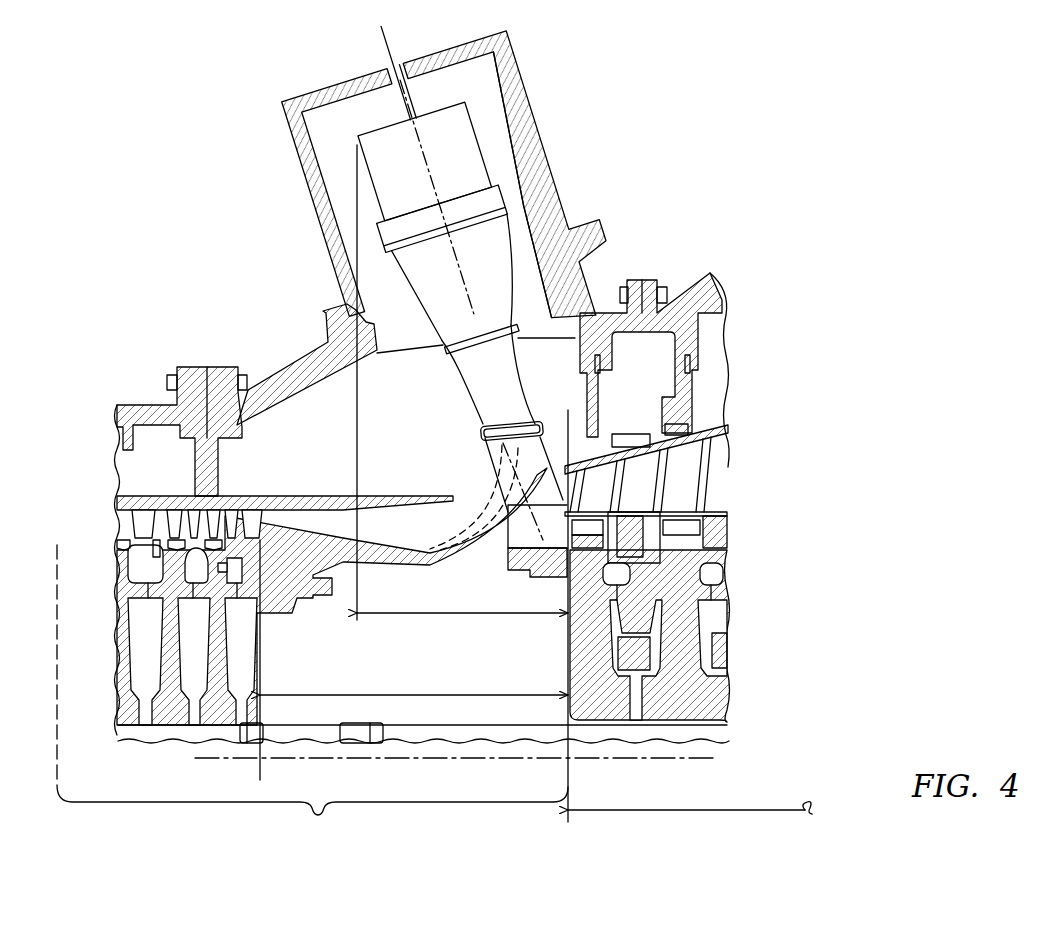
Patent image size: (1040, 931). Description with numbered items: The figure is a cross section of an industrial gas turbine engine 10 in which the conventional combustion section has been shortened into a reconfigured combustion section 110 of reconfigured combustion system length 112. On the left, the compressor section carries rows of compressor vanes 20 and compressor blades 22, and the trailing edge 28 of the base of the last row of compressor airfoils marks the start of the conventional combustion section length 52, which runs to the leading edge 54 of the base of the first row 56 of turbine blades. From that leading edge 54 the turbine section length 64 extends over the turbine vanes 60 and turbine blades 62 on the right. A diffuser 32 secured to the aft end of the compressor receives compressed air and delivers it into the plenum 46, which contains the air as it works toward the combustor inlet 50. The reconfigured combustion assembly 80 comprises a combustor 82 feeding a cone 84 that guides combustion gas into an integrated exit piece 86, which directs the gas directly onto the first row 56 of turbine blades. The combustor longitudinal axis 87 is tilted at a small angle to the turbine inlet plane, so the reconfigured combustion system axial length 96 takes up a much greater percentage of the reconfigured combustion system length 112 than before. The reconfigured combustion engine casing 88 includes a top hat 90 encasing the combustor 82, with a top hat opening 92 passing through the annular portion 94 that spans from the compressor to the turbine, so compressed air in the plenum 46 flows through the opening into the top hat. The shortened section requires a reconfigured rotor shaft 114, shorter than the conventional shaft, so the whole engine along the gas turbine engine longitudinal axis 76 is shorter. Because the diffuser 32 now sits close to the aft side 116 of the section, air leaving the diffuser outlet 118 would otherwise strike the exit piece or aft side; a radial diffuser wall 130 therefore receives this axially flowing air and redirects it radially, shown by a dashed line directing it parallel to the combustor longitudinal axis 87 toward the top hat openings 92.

The industrial gas turbine engine 10 is at (750, 182).
The compressor vanes 20 is at (253, 527).
The compressor blades 22 is at (210, 527).
The trailing edge 28 is at (260, 767).
The diffuser 32 is at (399, 537).
The plenum 46 is at (394, 438).
The combustor inlet 50 is at (373, 130).
The conventional combustion section length 52 is at (310, 815).
The leading edge 54 is at (567, 765).
The first row of turbine blades 56 is at (655, 452).
The turbine vanes 60 is at (627, 490).
The turbine blades 62 is at (683, 490).
The turbine section length 64 is at (738, 810).
The gas turbine engine longitudinal axis 76 is at (640, 758).
The reconfigured combustion assembly 80 is at (533, 212).
The combustor 82 is at (395, 178).
The cone 84 is at (422, 283).
The integrated exit piece 86 is at (490, 403).
The combustor longitudinal axis 87 is at (385, 42).
The reconfigured combustion engine casing 88 is at (523, 77).
The top hat 90 is at (318, 88).
The top hat opening 92 is at (423, 350).
The annular portion 94 is at (303, 362).
The reconfigured combustion system axial length 96 is at (462, 615).
The reconfigured combustion section 110 is at (240, 320).
The reconfigured combustion system length 112 is at (445, 690).
The reconfigured rotor shaft 114 is at (160, 732).
The aft side 116 is at (572, 452).
The diffuser outlet 118 is at (450, 527).
The radial diffuser wall 130 is at (477, 560).